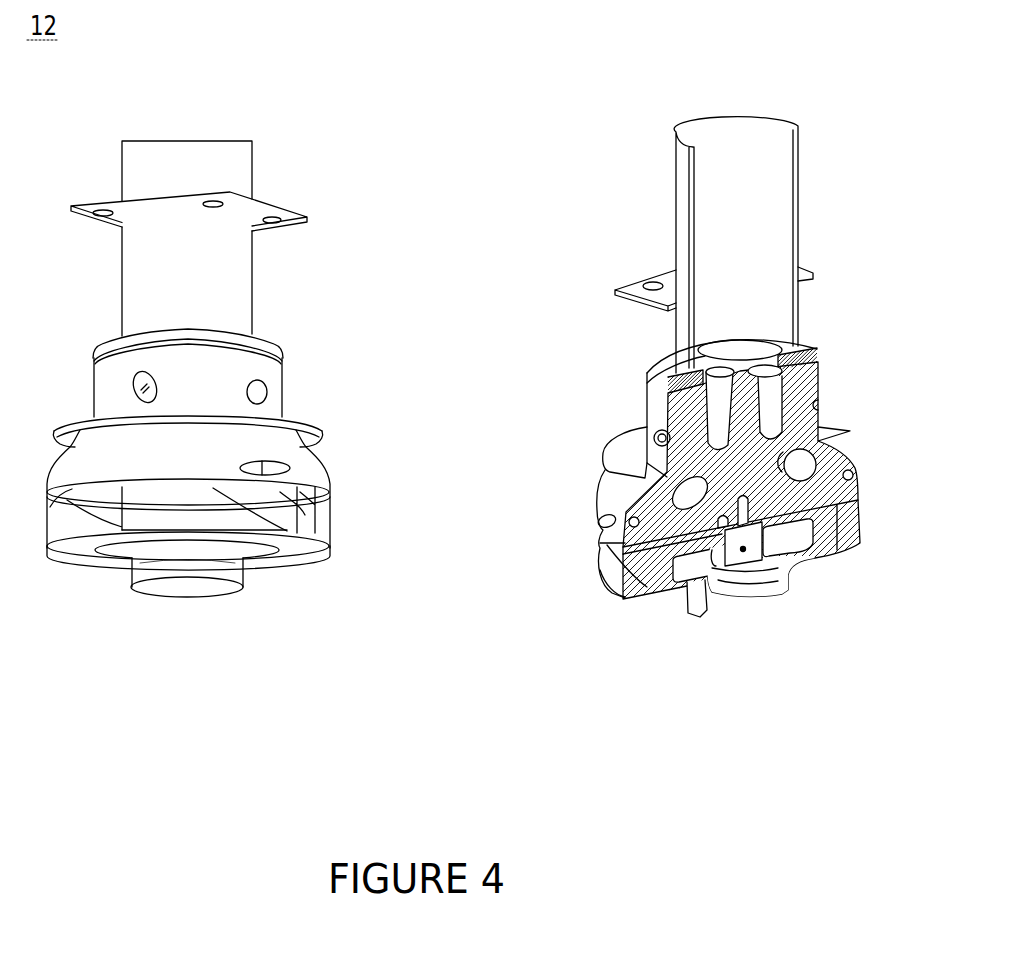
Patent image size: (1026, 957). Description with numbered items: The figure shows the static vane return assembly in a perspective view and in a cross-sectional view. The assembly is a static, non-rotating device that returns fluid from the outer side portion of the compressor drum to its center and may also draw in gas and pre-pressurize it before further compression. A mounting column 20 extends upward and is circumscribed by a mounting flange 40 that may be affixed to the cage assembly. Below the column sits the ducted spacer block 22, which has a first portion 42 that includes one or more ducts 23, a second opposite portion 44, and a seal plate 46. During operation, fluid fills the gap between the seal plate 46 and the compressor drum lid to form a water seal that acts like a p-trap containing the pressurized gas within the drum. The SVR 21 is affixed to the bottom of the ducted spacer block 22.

The mounting column 20 is at (244, 168).
The SVR 21 is at (330, 524).
The ducted spacer block 22 is at (816, 360).
The ducts 23 is at (773, 381).
The mounting flange 40 is at (627, 285).
The first portion 42 is at (102, 373).
The second opposite portion 44 is at (250, 444).
The seal plate 46 is at (618, 450).